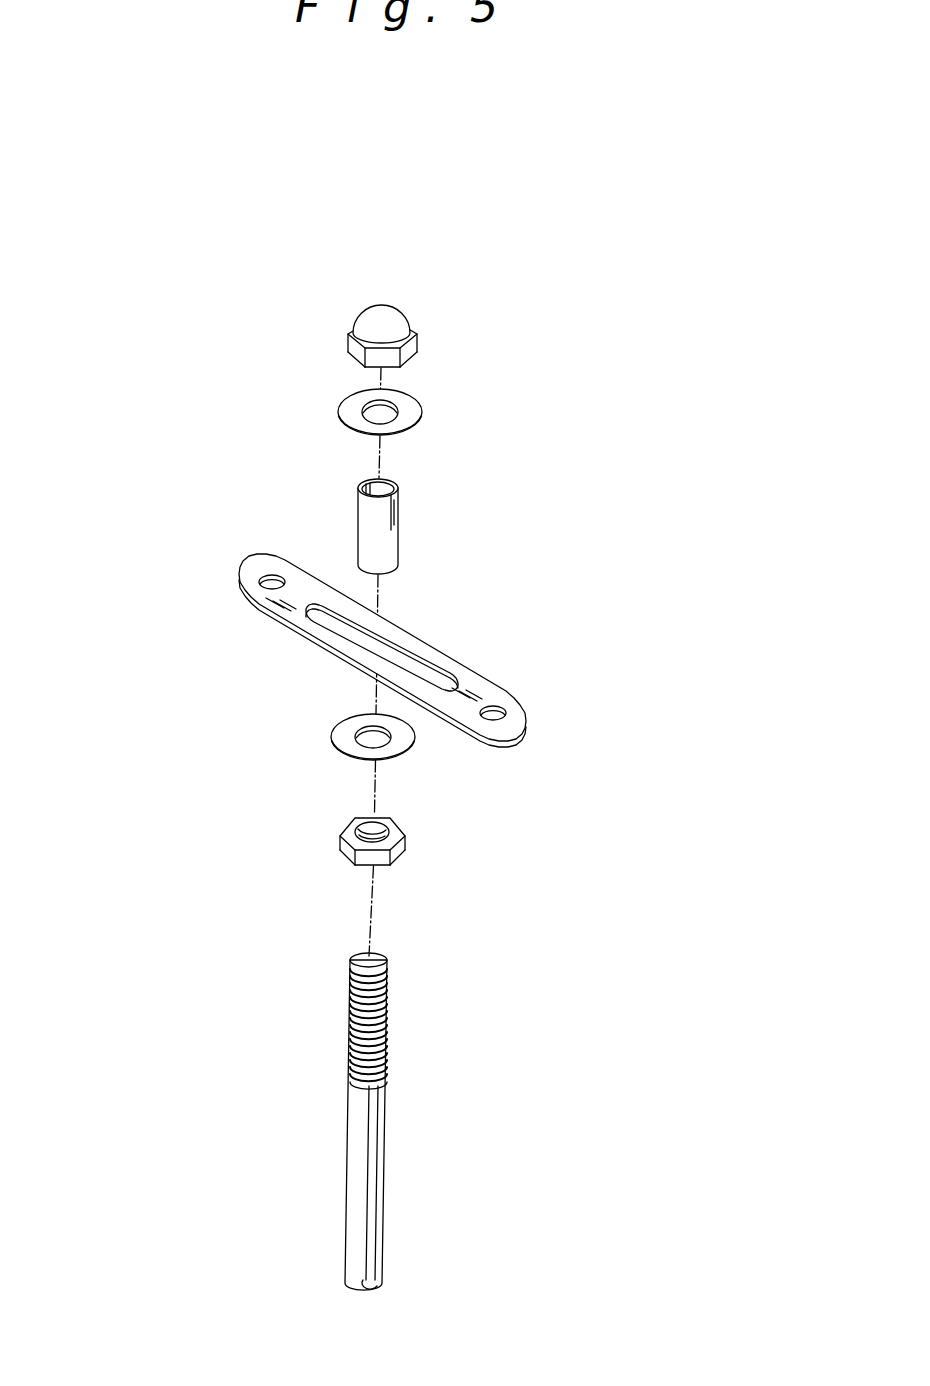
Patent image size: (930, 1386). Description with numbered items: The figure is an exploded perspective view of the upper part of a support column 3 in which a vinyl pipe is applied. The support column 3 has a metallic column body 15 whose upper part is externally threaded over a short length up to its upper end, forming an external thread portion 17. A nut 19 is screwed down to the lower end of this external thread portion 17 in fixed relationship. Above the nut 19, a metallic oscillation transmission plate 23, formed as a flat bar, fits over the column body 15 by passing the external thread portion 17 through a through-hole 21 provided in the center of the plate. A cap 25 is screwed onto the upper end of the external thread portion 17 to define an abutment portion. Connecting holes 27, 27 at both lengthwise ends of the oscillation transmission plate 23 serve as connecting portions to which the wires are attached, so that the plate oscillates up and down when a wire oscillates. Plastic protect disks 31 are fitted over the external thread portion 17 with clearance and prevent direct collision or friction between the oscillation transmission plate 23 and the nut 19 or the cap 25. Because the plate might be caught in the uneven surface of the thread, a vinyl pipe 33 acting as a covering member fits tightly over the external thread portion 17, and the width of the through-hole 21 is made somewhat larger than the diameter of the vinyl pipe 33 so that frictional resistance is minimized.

The support column 3 is at (212, 808).
The column body 15 is at (444, 1121).
The external thread portion 17 is at (388, 1013).
The nut 19 is at (398, 858).
The through-hole 21 is at (408, 661).
The oscillation transmission plate 23 is at (383, 579).
The cap 25 is at (388, 323).
The connecting hole 27 is at (274, 583).
The protect disk 31 is at (410, 412).
The vinyl pipe 33 is at (400, 553).